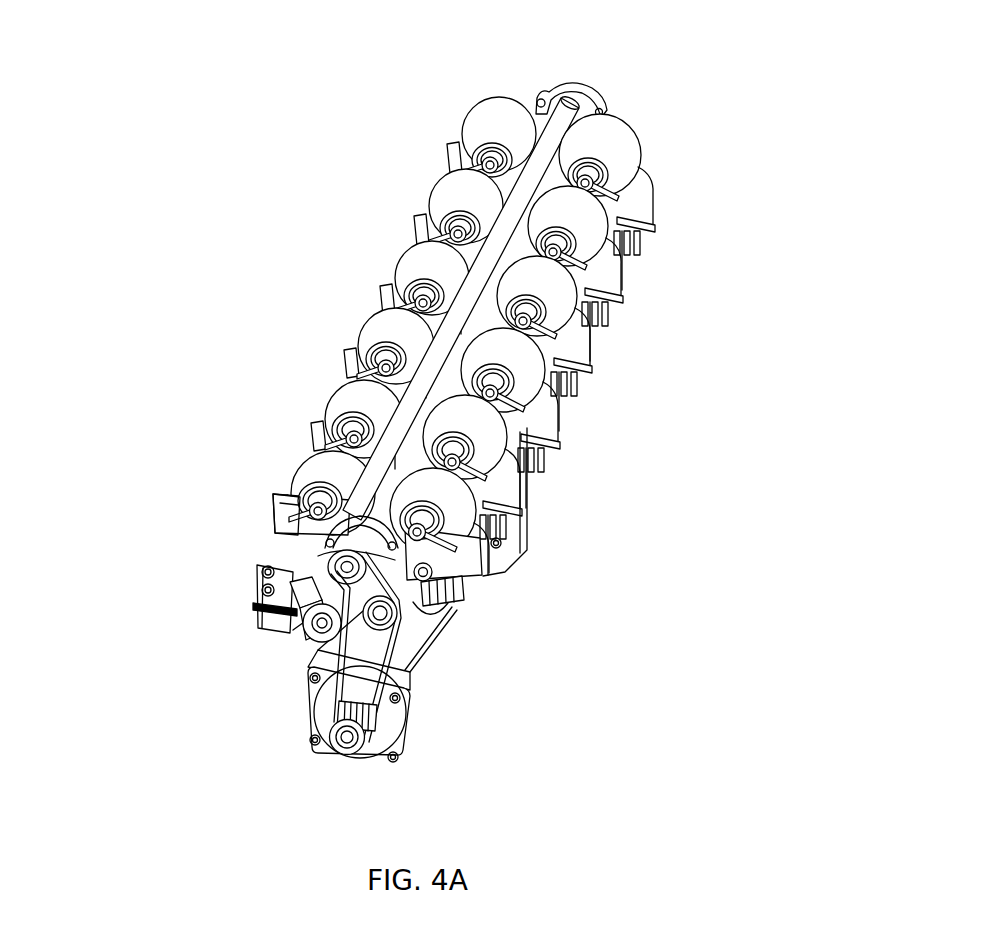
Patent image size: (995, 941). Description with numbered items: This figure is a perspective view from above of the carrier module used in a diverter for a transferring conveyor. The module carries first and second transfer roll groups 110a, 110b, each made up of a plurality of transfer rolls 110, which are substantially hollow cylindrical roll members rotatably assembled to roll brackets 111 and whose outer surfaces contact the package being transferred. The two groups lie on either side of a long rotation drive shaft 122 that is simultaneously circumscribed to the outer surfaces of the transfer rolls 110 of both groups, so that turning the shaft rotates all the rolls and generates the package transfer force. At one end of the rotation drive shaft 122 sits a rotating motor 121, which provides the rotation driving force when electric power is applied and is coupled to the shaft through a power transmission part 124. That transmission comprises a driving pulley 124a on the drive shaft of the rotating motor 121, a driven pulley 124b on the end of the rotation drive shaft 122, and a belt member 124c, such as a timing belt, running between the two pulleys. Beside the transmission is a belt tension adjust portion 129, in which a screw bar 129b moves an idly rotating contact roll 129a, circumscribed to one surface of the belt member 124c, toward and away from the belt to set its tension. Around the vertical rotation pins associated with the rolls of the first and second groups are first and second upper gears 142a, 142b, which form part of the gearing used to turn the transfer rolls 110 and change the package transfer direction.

The transfer roll 110 is at (313, 463).
The first transfer roll group 110a is at (255, 386).
The second transfer roll group 110b is at (640, 430).
The roll bracket 111 is at (297, 503).
The rotating motor 121 is at (430, 678).
The rotation drive shaft 122 is at (552, 88).
The power transmission part 124 is at (265, 745).
The driving pulley 124a is at (345, 752).
The driven pulley 124b is at (257, 590).
The belt member 124c is at (322, 655).
The belt tension adjust portion 129 is at (196, 625).
The contact roll 129a is at (318, 634).
The screw bar 129b is at (305, 628).
The first upper gear 142a is at (330, 560).
The second upper gear 142b is at (455, 598).